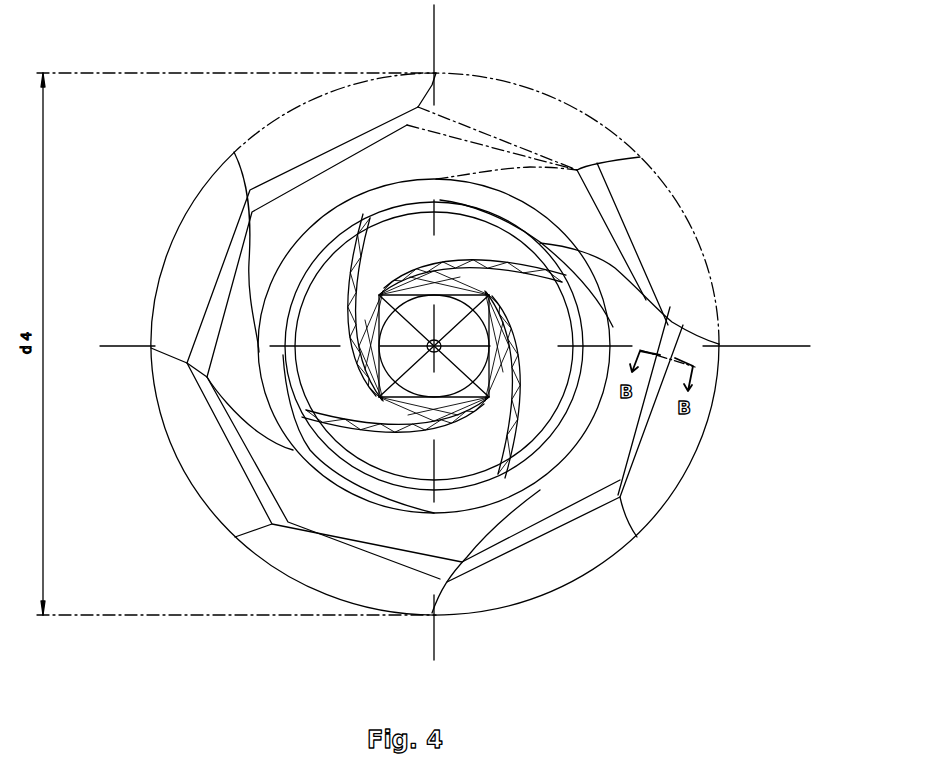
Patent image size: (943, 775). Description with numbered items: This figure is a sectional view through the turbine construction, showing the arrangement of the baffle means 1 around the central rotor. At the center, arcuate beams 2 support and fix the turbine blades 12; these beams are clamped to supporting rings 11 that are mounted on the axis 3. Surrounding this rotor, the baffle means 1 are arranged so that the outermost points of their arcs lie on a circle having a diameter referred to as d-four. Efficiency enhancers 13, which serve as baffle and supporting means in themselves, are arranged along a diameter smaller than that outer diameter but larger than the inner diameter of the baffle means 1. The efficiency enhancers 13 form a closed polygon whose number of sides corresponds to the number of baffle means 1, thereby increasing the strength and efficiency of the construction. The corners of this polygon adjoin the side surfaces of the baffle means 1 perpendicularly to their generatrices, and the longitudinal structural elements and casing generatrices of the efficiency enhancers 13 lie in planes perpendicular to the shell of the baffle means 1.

The baffle means 1 is at (641, 294).
The arcuate beams 2 is at (350, 298).
The axis 3 is at (505, 385).
The supporting rings 11 is at (497, 367).
The turbine blades 12 is at (520, 263).
The efficiency enhancers 13 is at (498, 140).